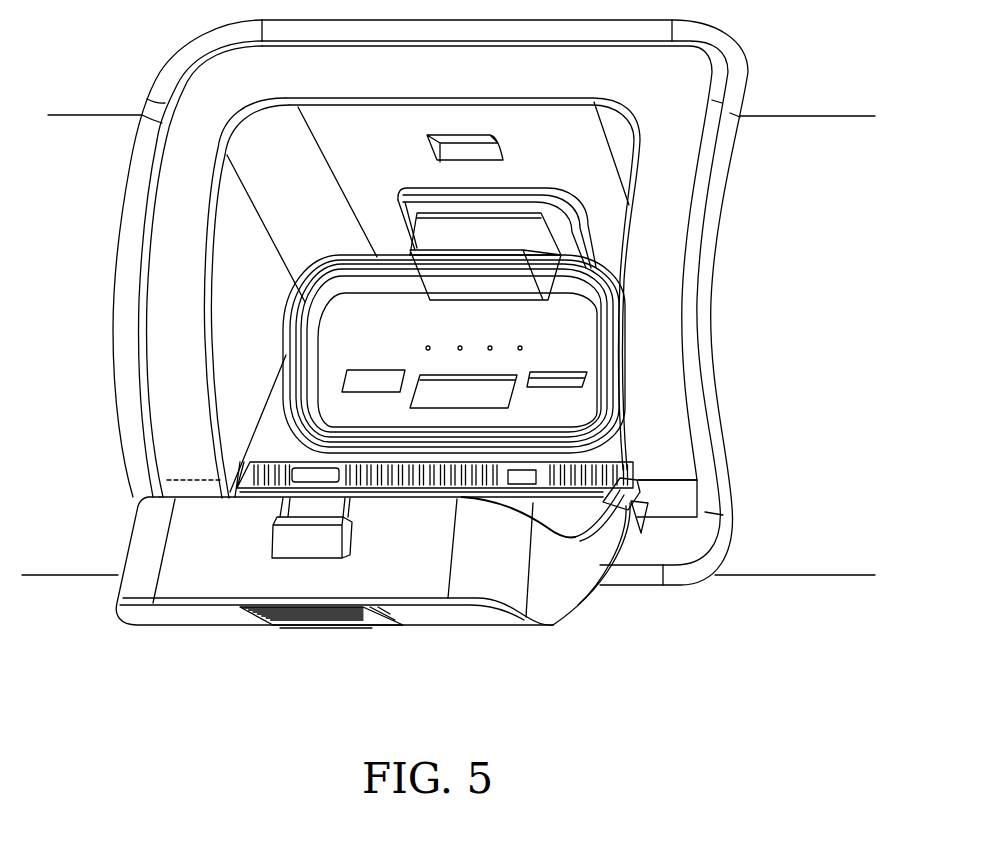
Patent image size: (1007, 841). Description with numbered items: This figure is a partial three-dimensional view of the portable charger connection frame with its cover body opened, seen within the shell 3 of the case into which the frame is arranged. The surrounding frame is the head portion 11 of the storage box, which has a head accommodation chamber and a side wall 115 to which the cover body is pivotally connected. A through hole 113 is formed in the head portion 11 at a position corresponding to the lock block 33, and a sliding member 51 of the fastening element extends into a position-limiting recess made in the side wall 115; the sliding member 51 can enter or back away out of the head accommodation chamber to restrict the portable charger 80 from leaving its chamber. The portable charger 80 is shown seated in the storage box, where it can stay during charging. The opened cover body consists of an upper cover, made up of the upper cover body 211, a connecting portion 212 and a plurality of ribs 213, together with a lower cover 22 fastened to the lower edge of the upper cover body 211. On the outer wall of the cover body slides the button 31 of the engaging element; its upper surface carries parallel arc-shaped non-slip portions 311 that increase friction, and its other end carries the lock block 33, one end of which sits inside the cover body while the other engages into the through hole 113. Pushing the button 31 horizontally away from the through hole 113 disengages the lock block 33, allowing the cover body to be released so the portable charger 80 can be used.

The shell 3 is at (778, 133).
The head portion 11 is at (703, 93).
The through hole 113 is at (468, 142).
The side wall 115 is at (257, 327).
The sliding member 51 is at (487, 225).
The portable charger 80 is at (403, 317).
The ribs 213 is at (265, 478).
The connecting portion 212 is at (583, 485).
The lower cover 22 is at (620, 493).
The upper cover body 211 is at (600, 583).
The button 31 is at (359, 561).
The non-slip portions 311 is at (363, 606).
The lock block 33 is at (300, 553).